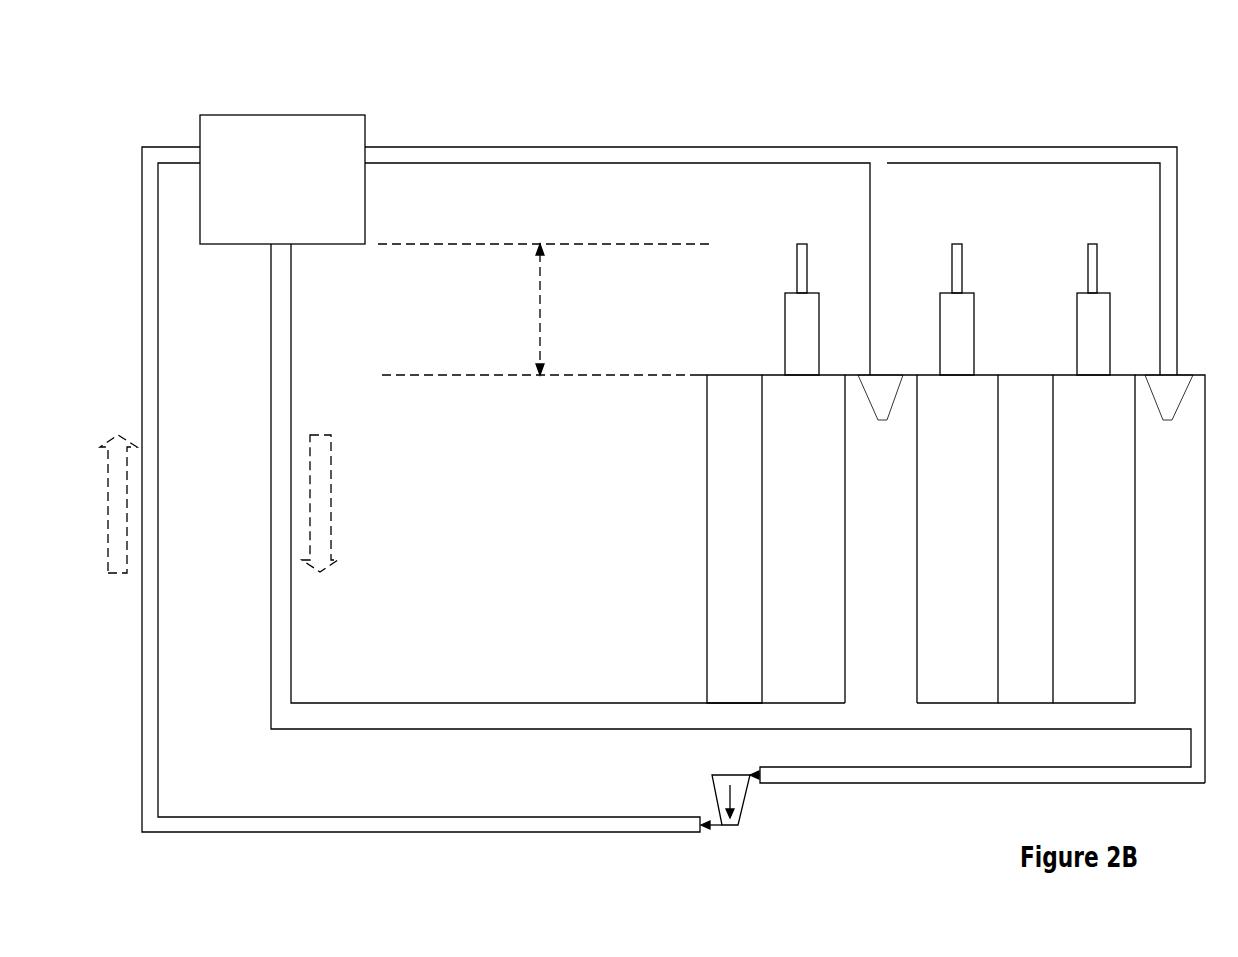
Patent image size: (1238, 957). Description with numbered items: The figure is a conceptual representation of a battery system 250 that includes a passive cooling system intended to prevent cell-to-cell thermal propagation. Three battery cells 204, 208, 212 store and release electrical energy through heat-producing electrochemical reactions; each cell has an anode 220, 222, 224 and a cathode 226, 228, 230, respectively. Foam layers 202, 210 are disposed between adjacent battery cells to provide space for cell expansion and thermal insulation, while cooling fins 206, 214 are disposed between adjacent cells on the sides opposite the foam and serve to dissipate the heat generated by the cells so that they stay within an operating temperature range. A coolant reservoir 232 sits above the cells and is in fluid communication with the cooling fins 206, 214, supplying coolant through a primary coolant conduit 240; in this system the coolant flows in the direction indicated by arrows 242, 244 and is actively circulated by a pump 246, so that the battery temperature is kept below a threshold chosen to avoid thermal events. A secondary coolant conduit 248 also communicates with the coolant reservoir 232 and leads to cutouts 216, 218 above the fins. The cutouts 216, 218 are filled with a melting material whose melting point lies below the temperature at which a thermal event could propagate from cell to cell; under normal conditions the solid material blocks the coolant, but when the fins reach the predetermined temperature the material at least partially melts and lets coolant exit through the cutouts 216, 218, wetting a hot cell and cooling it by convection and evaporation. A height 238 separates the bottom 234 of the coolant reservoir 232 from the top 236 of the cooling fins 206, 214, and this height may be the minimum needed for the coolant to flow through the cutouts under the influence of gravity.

The foam layer 202 is at (750, 551).
The battery cell 204 is at (819, 551).
The cooling fin 206 is at (895, 551).
The battery cell 208 is at (973, 551).
The foam layer 210 is at (1040, 551).
The battery cell 212 is at (1108, 551).
The cooling fin 214 is at (1183, 551).
The cutout 216 is at (882, 421).
The cutout 218 is at (1168, 421).
The anode 220 is at (785, 313).
The anode 222 is at (975, 313).
The anode 224 is at (1077, 307).
The cathode 226 is at (797, 263).
The cathode 228 is at (962, 263).
The cathode 230 is at (1088, 252).
The coolant reservoir 232 is at (282, 179).
The bottom of the coolant reservoir 234 is at (618, 243).
The top of the cooling fins 236 is at (618, 375).
The height 238 is at (540, 330).
The primary coolant conduit 240 is at (505, 730).
The arrow 242 is at (320, 435).
The arrow 244 is at (118, 573).
The pump 246 is at (745, 797).
The secondary coolant conduit 248 is at (510, 163).
The battery system 250 is at (163, 115).